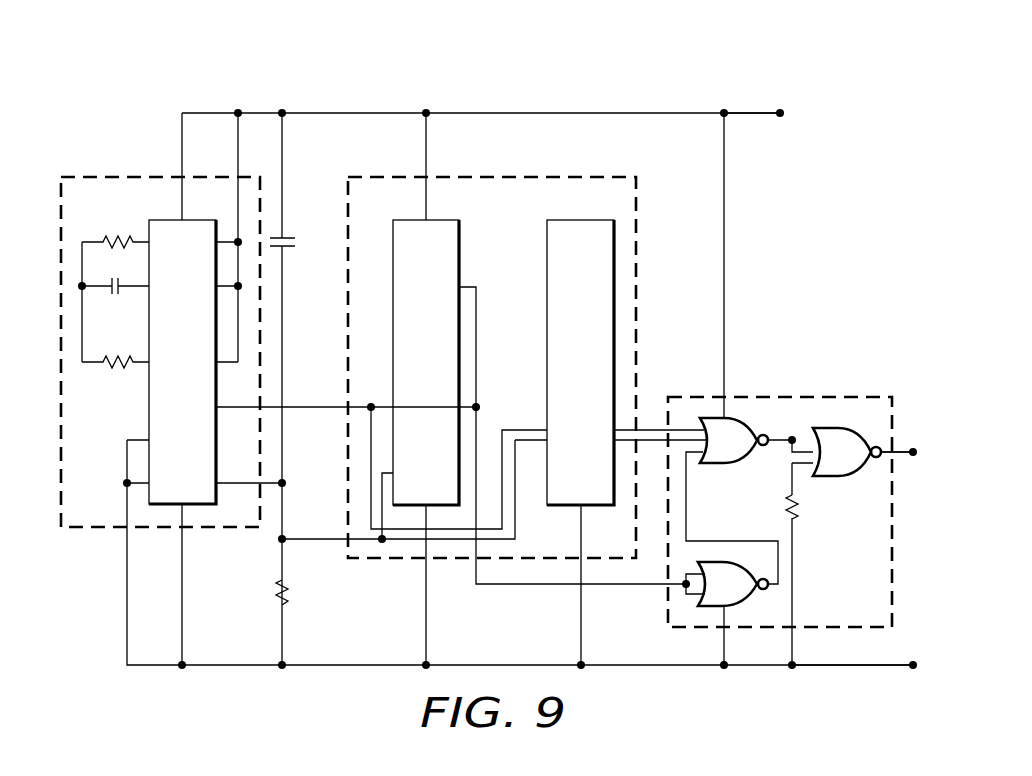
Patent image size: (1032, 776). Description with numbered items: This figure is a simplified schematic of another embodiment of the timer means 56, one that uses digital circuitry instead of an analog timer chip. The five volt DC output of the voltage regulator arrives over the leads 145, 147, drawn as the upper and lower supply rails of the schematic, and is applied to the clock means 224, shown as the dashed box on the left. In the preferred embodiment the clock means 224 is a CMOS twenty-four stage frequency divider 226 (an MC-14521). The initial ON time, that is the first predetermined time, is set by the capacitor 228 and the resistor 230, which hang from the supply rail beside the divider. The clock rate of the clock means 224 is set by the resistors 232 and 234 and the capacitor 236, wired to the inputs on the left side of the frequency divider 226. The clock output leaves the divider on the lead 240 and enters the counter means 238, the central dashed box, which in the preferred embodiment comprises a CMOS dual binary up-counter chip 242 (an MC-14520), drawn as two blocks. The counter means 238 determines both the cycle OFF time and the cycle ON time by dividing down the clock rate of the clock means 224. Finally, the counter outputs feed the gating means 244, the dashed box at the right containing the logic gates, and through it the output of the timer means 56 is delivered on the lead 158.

The timer means 56 is at (583, 82).
The lead 145 is at (748, 113).
The lead 147 is at (838, 668).
The lead 158 is at (905, 450).
The clock means 224 is at (130, 177).
The frequency divider 226 is at (182, 362).
The capacitor 228 is at (290, 234).
The resistor 230 is at (276, 598).
The resistor 232 is at (113, 238).
The resistor 234 is at (116, 370).
The capacitor 236 is at (116, 298).
The counter means 238 is at (532, 177).
The lead 240 is at (322, 405).
The dual binary up-counter chip 242 is at (503, 362).
The gating means 244 is at (796, 397).